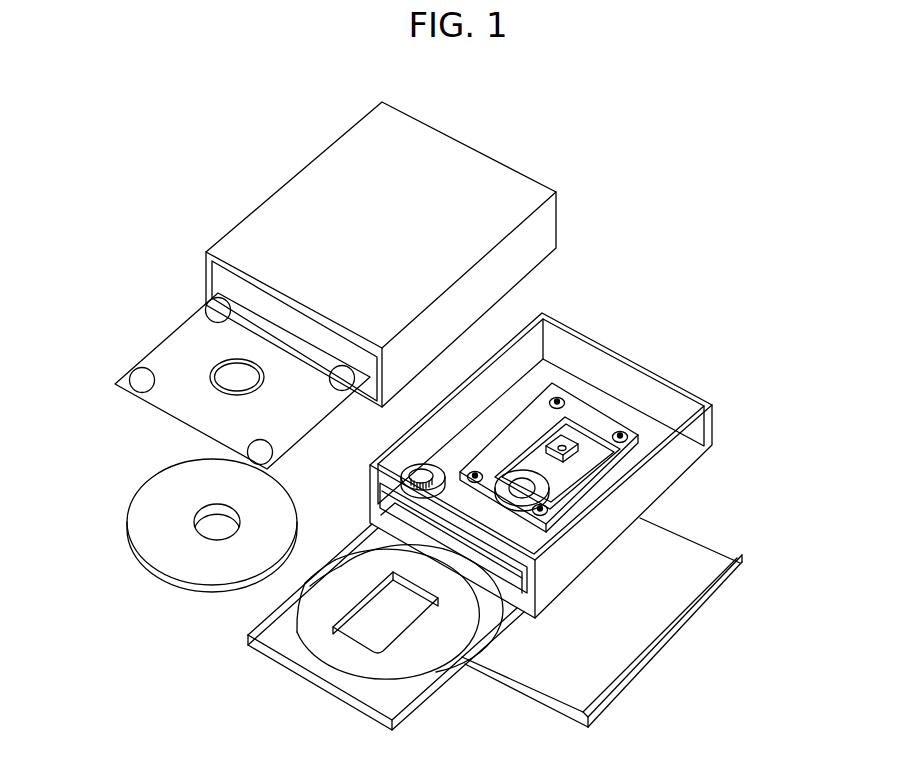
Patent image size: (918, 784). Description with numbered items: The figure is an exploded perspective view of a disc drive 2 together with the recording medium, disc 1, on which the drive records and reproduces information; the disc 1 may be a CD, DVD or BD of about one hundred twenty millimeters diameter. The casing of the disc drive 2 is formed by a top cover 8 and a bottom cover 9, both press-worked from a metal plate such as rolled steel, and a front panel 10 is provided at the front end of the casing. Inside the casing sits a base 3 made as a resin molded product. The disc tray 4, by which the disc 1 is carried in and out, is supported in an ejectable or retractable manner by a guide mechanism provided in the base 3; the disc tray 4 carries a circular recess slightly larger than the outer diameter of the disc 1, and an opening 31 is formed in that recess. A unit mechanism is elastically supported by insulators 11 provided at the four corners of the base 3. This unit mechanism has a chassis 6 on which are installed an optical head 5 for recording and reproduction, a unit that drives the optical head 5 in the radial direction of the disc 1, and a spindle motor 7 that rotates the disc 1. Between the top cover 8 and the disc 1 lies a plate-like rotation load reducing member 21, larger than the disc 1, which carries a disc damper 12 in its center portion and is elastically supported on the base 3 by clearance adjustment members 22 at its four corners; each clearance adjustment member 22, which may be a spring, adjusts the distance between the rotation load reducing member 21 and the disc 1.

The disc 1 is at (157, 480).
The disc drive 2 is at (688, 226).
The base 3 is at (541, 486).
The disc tray 4 is at (386, 633).
The optical head 5 is at (584, 437).
The chassis 6 is at (628, 446).
The spindle motor 7 is at (512, 500).
The top cover 8 is at (500, 179).
The bottom cover 9 is at (645, 630).
The front panel 10 is at (520, 605).
The insulator 11 is at (558, 400).
The disc damper 12 is at (223, 372).
The rotation load reducing member 21 is at (200, 330).
The clearance adjustment member 22 is at (138, 378).
The opening 31 is at (400, 627).